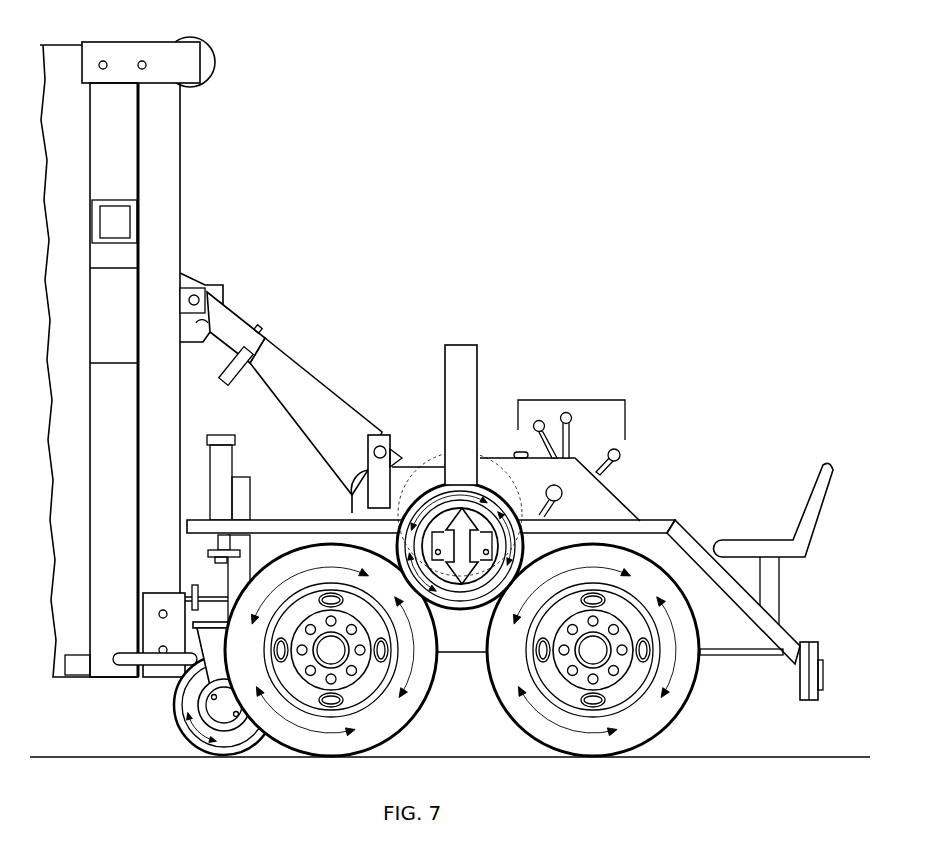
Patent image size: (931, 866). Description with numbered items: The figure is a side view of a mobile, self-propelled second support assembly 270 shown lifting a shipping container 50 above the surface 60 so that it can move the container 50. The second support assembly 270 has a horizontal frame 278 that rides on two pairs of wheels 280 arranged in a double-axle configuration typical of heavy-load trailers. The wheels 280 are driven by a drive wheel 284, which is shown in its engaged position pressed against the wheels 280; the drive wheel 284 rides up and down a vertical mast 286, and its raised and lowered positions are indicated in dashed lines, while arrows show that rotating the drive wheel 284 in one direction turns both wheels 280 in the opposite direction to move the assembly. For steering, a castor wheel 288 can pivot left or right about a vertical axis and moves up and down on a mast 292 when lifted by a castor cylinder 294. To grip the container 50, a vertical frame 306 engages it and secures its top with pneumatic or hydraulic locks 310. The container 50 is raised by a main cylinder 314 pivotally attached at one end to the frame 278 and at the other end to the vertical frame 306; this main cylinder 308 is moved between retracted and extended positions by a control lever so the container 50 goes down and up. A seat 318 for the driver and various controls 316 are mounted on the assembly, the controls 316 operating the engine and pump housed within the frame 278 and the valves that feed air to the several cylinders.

The container 50 is at (50, 45).
The surface 60 is at (110, 757).
The second support assembly 270 is at (473, 533).
The frame 278 is at (312, 520).
The wheels 280 is at (420, 702).
The drive wheel 284 is at (440, 485).
The vertical mast 286 is at (445, 386).
The castor wheel 288 is at (178, 727).
The mast 292 is at (249, 485).
The castor cylinder 294 is at (232, 456).
The vertical frame 306 is at (153, 357).
The main cylinder 308 is at (292, 402).
The pneumatic or hydraulic locks 310 is at (212, 75).
The main cylinder 314 is at (268, 402).
The controls 316 is at (578, 400).
The seat 318 is at (808, 498).